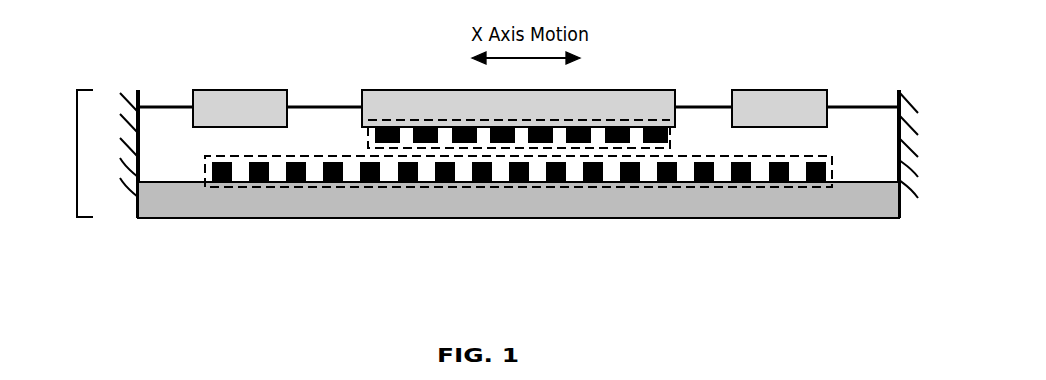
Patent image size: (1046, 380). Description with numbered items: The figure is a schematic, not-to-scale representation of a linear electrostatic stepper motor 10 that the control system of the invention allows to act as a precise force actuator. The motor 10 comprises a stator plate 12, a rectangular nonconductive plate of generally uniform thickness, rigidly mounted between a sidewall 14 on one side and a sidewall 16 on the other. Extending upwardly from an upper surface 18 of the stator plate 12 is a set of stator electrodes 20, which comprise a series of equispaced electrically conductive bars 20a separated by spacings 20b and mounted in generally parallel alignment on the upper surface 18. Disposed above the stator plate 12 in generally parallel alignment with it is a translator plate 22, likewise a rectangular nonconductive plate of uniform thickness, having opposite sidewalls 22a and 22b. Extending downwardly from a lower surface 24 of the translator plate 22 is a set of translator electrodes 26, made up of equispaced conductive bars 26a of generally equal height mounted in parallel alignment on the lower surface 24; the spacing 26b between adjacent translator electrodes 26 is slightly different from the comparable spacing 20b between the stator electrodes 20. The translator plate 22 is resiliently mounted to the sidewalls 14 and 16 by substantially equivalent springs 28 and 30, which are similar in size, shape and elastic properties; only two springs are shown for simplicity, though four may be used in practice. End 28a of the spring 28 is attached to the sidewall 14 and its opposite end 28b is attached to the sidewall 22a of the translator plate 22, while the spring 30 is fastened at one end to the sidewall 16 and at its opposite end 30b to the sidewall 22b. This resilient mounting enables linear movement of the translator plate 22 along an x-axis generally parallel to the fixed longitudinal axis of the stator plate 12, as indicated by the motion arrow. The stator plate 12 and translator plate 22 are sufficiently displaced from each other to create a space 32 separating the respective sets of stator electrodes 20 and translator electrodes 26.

The linear electrostatic stepper motor 10 is at (77, 153).
The stator plate 12 is at (662, 218).
The sidewall 14 is at (126, 186).
The sidewall 16 is at (906, 184).
The upper surface 18 is at (852, 181).
The stator electrodes 20 is at (628, 185).
The conductive bar 20a is at (818, 183).
The spacing 20b is at (723, 172).
The translator plate 22 is at (472, 89).
The sidewall 22a is at (358, 100).
The sidewall 22b is at (677, 97).
The lower surface 24 is at (405, 128).
The translator electrodes 26 is at (463, 120).
The conductive bar 26a is at (647, 126).
The spacing 26b is at (593, 134).
The spring 28 is at (238, 89).
The end of spring 28a is at (157, 109).
The end of spring 28b is at (313, 106).
The spring 30 is at (785, 89).
The end of spring 30b is at (853, 106).
The space 32 is at (470, 153).